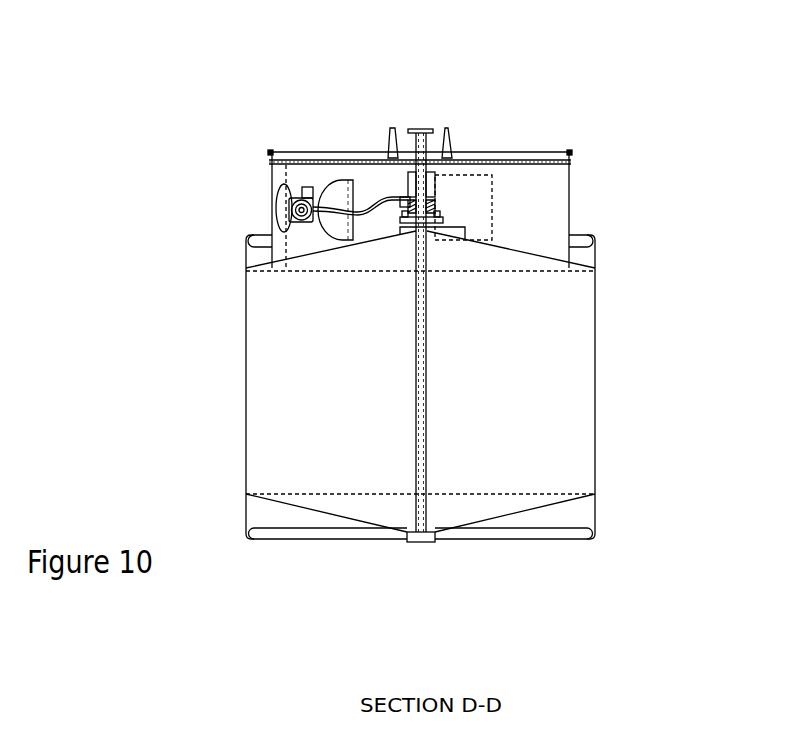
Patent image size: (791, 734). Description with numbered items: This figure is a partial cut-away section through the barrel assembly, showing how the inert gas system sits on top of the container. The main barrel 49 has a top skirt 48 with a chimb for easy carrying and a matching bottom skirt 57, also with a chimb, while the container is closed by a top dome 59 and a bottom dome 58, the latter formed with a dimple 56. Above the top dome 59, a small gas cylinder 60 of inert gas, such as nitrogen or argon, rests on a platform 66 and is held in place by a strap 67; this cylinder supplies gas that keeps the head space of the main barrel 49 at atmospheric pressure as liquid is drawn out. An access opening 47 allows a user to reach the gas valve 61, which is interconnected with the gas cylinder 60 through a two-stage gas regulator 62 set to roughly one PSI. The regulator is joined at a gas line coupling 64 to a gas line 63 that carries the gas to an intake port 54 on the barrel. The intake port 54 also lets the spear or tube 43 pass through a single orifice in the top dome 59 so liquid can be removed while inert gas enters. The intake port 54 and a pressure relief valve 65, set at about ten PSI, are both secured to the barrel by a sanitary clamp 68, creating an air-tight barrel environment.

The spear or tube 43 is at (425, 130).
The access opening 47 is at (271, 220).
The top skirt 48 is at (253, 253).
The main barrel 49 is at (278, 348).
The intake port 54 is at (442, 212).
The dimple 56 is at (425, 546).
The bottom skirt 57 is at (298, 524).
The bottom dome 58 is at (385, 522).
The top dome 59 is at (362, 240).
The gas cylinder 60 is at (448, 205).
The gas valve 61 is at (283, 203).
The gas regulator 62 is at (295, 192).
The gas line 63 is at (330, 202).
The gas line coupling 64 is at (301, 195).
The pressure relief valve 65 is at (407, 198).
The platform 66 is at (470, 228).
The strap 67 is at (435, 172).
The sanitary clamp 68 is at (477, 192).